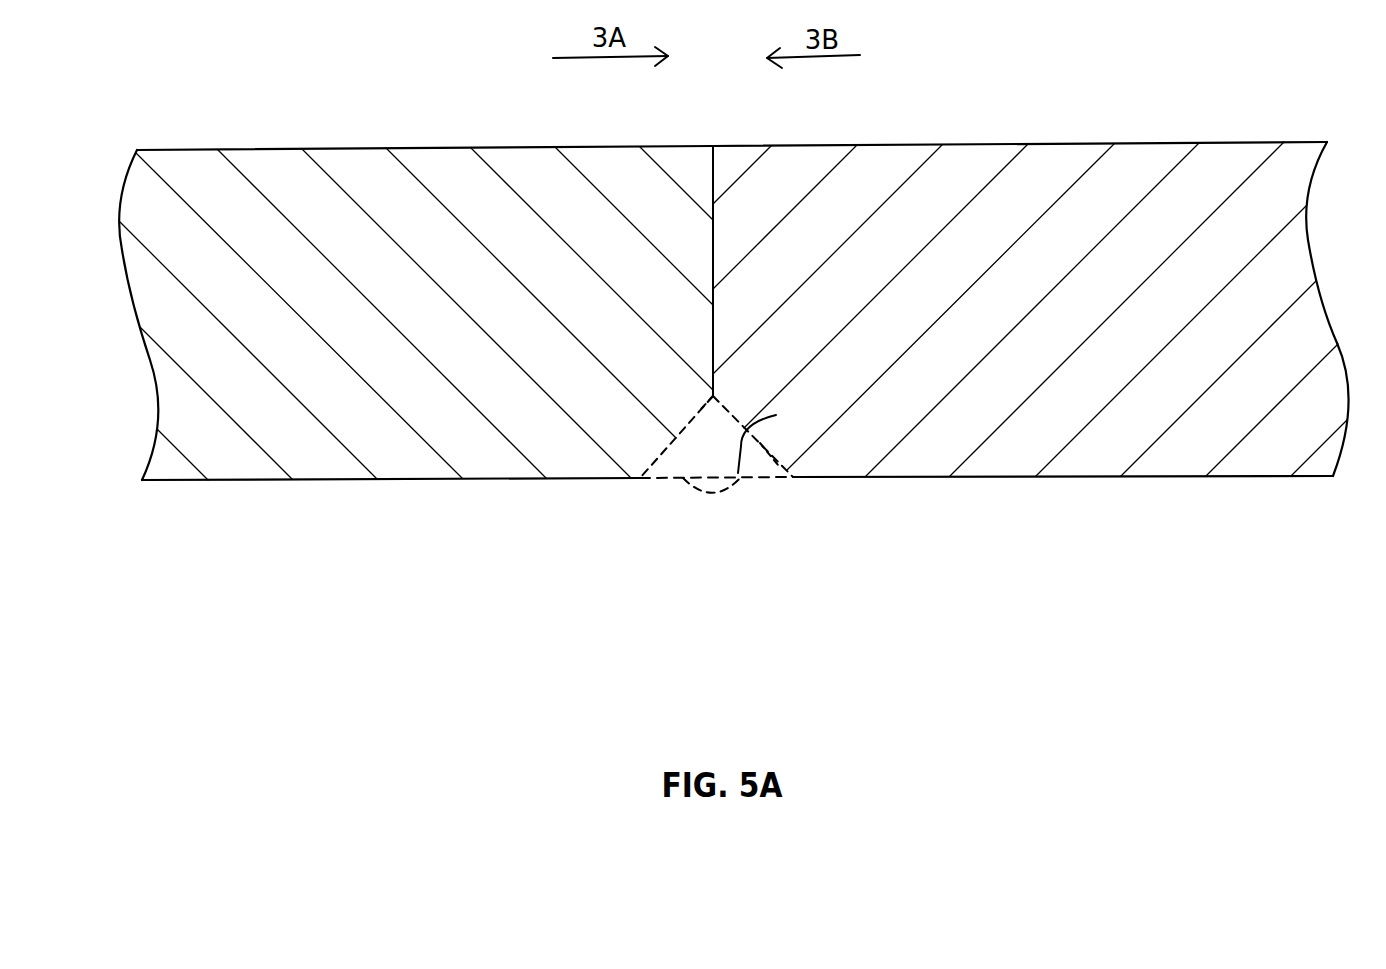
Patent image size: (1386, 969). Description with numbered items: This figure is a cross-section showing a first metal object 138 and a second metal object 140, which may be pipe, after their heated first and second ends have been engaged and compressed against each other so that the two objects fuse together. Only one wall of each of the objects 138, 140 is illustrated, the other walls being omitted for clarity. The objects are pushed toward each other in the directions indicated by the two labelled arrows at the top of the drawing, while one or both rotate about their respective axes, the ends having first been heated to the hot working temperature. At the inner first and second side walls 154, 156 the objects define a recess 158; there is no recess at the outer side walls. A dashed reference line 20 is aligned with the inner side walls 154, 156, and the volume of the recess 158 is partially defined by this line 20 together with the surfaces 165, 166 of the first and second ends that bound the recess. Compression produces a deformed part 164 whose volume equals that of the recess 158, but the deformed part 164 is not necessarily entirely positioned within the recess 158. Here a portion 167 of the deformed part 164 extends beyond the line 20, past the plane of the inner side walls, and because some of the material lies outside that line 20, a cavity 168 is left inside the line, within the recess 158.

The first metal object 138 is at (308, 172).
The second metal object 140 is at (970, 165).
The inner first side wall 154 is at (358, 481).
The inner second side wall 156 is at (1102, 476).
The recess 158 is at (650, 468).
The deformed part 164 is at (708, 417).
The surface of the first end 165 is at (684, 437).
The surface of the second end 166 is at (727, 411).
The portion of the deformed part 167 is at (722, 487).
The cavity 168 is at (772, 463).
The weld joint 20 is at (779, 437).